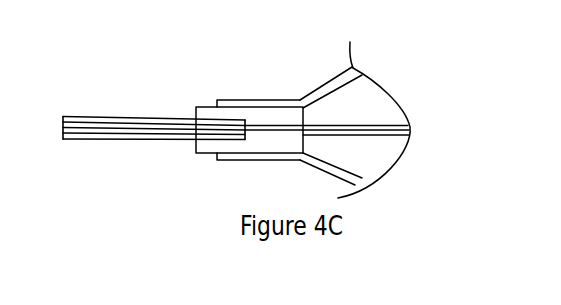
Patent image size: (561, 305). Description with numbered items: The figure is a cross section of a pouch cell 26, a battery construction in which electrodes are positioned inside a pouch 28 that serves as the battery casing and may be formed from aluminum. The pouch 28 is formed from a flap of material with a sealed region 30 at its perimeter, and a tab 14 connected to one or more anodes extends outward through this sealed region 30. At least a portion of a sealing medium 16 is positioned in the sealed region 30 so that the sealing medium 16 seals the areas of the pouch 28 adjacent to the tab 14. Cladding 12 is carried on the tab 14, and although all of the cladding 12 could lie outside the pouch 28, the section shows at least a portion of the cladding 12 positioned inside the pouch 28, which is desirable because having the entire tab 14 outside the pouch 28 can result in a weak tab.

The cladding 12 is at (77, 117).
The tab 14 is at (392, 128).
The sealing medium 16 is at (203, 107).
The pouch cell 26 is at (116, 163).
The pouch 28 is at (327, 84).
The sealed region 30 is at (252, 100).